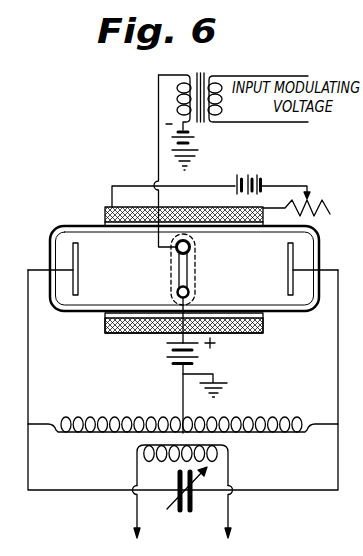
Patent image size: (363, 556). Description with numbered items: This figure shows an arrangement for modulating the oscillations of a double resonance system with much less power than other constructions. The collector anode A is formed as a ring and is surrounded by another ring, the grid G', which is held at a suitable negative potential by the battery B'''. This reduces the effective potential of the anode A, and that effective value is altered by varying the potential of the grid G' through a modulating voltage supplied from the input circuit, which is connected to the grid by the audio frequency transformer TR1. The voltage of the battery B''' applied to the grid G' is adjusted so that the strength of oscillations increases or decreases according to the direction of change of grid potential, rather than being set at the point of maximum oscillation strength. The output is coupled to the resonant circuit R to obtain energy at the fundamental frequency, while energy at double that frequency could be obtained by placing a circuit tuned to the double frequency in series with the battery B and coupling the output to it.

The audio frequency transformer TR1 is at (234, 91).
The battery B''' is at (197, 147).
The grid G' is at (203, 248).
The collector anode A is at (189, 291).
The battery B is at (178, 351).
The resonant circuit R is at (207, 493).